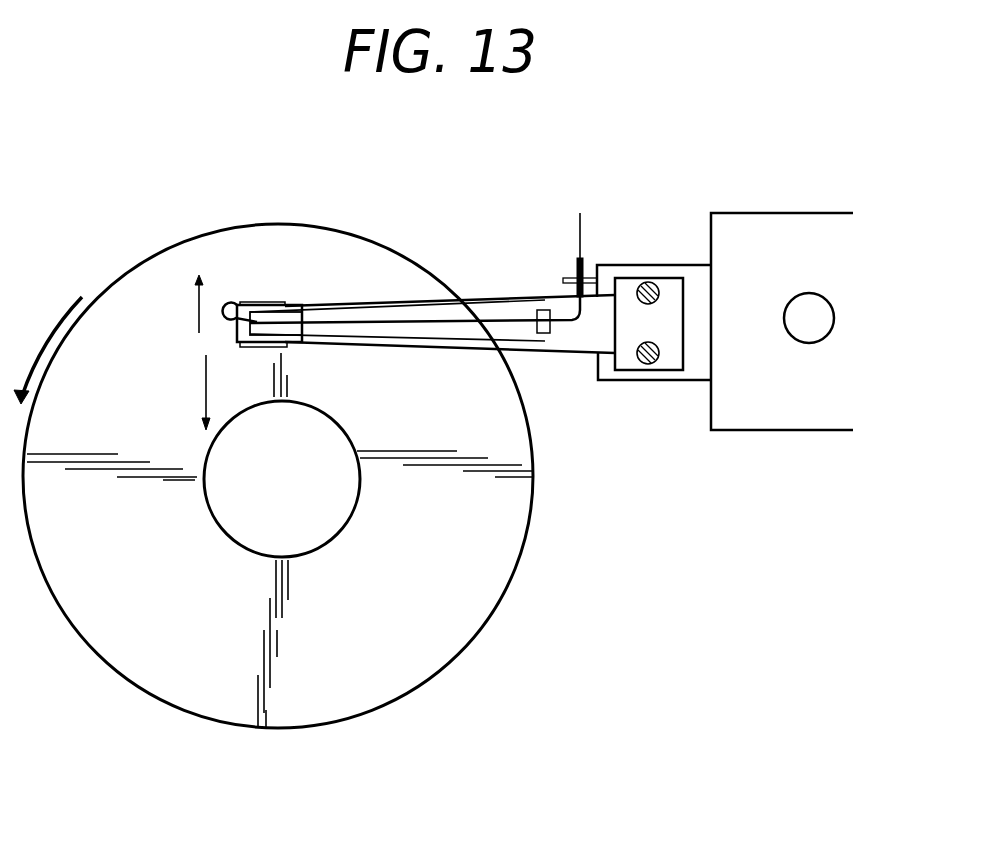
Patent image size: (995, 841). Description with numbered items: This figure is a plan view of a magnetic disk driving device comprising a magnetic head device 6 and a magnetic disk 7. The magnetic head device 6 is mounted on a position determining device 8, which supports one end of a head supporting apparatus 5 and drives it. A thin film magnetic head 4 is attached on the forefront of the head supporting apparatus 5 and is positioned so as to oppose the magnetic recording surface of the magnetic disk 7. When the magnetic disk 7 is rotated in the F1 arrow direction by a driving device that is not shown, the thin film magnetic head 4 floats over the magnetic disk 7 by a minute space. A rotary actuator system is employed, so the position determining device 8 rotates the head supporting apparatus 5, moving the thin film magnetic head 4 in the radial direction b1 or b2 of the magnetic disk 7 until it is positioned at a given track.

The thin film magnetic head 4 is at (262, 305).
The head supporting apparatus 5 is at (468, 308).
The magnetic head device 6 is at (550, 360).
The magnetic disk 7 is at (473, 621).
The position determining device 8 is at (805, 407).
The arrow direction F1 is at (59, 315).
The radial direction b1 is at (203, 373).
The radial direction b2 is at (197, 318).